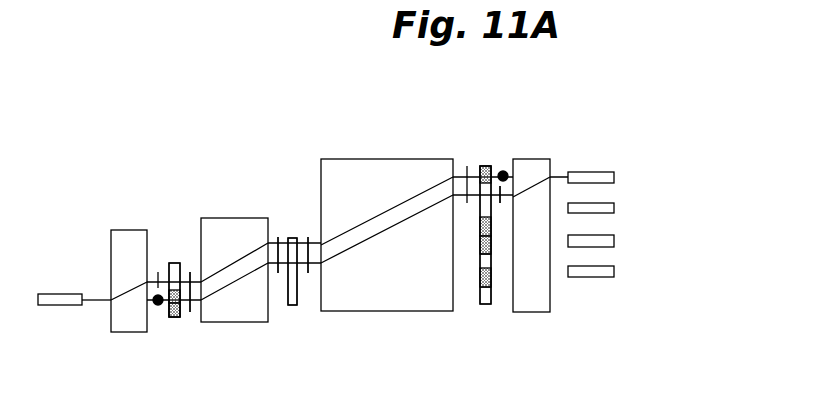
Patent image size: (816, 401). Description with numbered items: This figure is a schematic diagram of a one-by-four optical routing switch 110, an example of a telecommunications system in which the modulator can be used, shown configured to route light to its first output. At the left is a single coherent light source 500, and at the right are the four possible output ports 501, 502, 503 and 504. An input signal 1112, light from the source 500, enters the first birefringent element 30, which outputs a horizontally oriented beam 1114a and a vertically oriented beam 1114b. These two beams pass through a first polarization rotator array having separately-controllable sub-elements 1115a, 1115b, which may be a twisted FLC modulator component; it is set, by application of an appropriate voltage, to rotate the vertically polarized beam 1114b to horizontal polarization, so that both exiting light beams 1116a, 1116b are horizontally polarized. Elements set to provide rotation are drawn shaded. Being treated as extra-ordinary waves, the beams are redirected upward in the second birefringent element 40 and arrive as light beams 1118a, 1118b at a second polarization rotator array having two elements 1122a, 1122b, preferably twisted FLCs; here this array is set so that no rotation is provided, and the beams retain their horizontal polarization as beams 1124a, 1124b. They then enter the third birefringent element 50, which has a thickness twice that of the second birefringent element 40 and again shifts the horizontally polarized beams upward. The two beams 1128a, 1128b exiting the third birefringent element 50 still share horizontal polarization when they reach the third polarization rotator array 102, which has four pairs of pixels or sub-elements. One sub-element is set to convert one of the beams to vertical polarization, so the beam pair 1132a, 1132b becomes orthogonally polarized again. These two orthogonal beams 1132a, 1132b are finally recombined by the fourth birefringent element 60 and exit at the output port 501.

The optical measurement system 110 is at (160, 127).
The light source 500 is at (57, 294).
The input signal 1112 is at (93, 306).
The first birefringent element 30 is at (125, 230).
The horizontally oriented beam 1114a is at (158, 272).
The vertically oriented beam 1114b is at (157, 305).
The sub-element 1115a is at (176, 263).
The sub-element 1115b is at (174, 317).
The light beam 1116a is at (190, 272).
The light beam 1116b is at (190, 312).
The second birefringent element 40 is at (223, 218).
The light beam 1118a is at (278, 237).
The light beam 1118b is at (278, 273).
The element 1122a is at (291, 238).
The element 1122b is at (291, 305).
The light beam 1124a is at (309, 237).
The light beam 1124b is at (308, 273).
The third birefringent element 50 is at (422, 400).
The light beam 1128a is at (459, 215).
The light beam 1128b is at (459, 215).
The third polarization rotator array 102 is at (503, 393).
The beam 1132a is at (504, 170).
The beam 1132b is at (500, 203).
The fourth birefringent element 60 is at (530, 159).
The output port 501 is at (614, 174).
The output port 502 is at (614, 209).
The output port 503 is at (614, 240).
The output port 504 is at (614, 271).